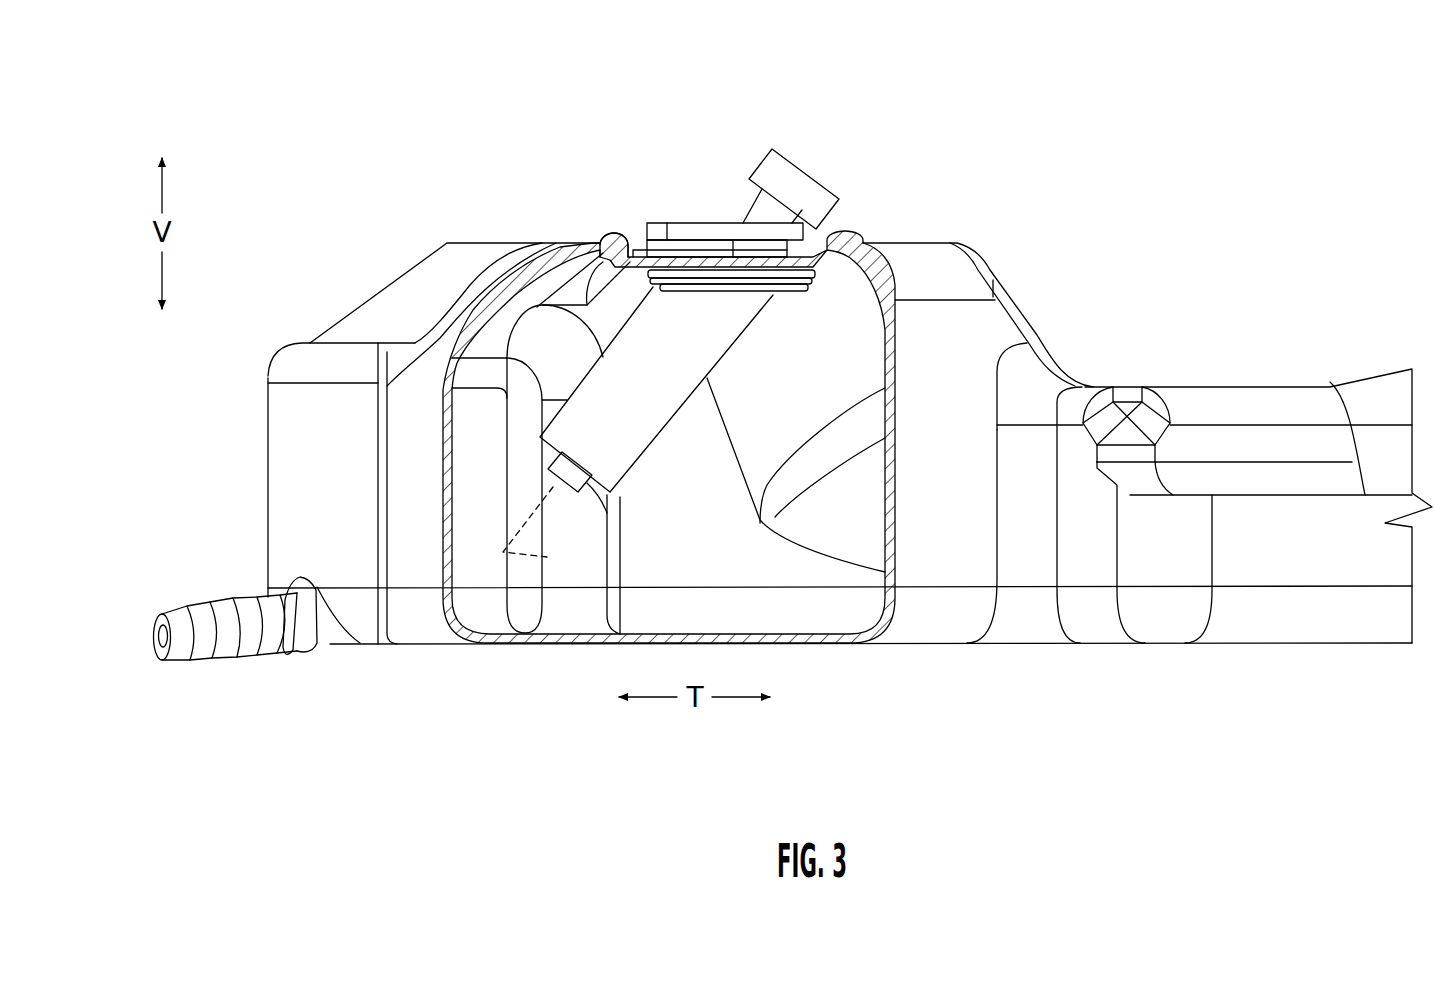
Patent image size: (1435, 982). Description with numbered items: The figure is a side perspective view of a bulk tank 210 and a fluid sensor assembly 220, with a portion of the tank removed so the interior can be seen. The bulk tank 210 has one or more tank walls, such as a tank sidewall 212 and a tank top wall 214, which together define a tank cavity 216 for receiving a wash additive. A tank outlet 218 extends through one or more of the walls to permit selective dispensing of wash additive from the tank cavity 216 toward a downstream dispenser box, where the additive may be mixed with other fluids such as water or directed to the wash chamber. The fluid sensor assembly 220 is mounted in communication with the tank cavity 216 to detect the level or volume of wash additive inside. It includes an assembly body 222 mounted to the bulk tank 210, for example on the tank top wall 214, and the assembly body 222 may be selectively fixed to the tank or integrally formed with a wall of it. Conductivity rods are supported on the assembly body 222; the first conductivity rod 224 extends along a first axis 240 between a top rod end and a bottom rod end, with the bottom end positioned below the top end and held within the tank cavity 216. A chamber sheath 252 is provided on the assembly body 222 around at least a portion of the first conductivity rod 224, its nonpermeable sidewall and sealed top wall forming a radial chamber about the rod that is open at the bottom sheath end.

The bulk tank 210 is at (1035, 337).
The tank sidewall 212 is at (444, 520).
The tank top wall 214 is at (603, 238).
The tank cavity 216 is at (703, 561).
The tank outlet 218 is at (150, 641).
The fluid sensor assembly 220 is at (823, 102).
The assembly body 222 is at (795, 237).
The first conductivity rod 224 is at (605, 510).
The first axis 240 is at (547, 557).
The chamber sheath 252 is at (663, 402).